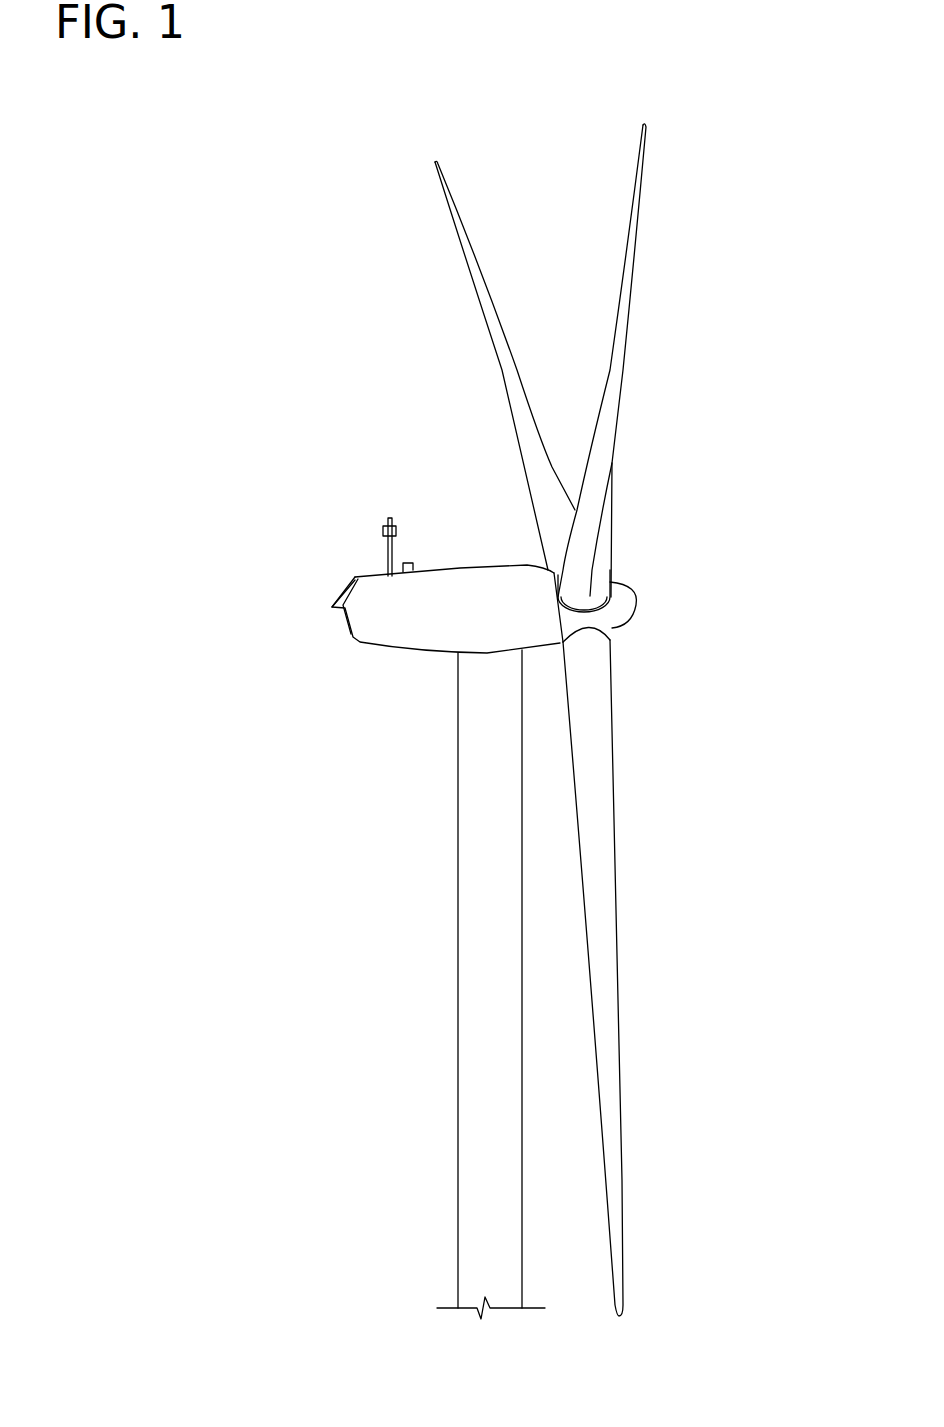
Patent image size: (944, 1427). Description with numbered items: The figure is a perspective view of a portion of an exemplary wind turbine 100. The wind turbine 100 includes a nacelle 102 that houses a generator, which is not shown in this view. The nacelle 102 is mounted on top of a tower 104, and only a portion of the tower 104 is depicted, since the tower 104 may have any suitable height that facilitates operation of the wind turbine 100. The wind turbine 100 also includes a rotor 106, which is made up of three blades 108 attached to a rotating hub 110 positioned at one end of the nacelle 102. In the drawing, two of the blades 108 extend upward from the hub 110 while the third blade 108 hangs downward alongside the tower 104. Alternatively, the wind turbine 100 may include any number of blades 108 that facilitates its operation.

The wind turbine 100 is at (325, 210).
The nacelle 102 is at (390, 648).
The tower 104 is at (458, 931).
The rotor 106 is at (637, 720).
The blades 108 is at (472, 238).
The rotating hub 110 is at (625, 618).